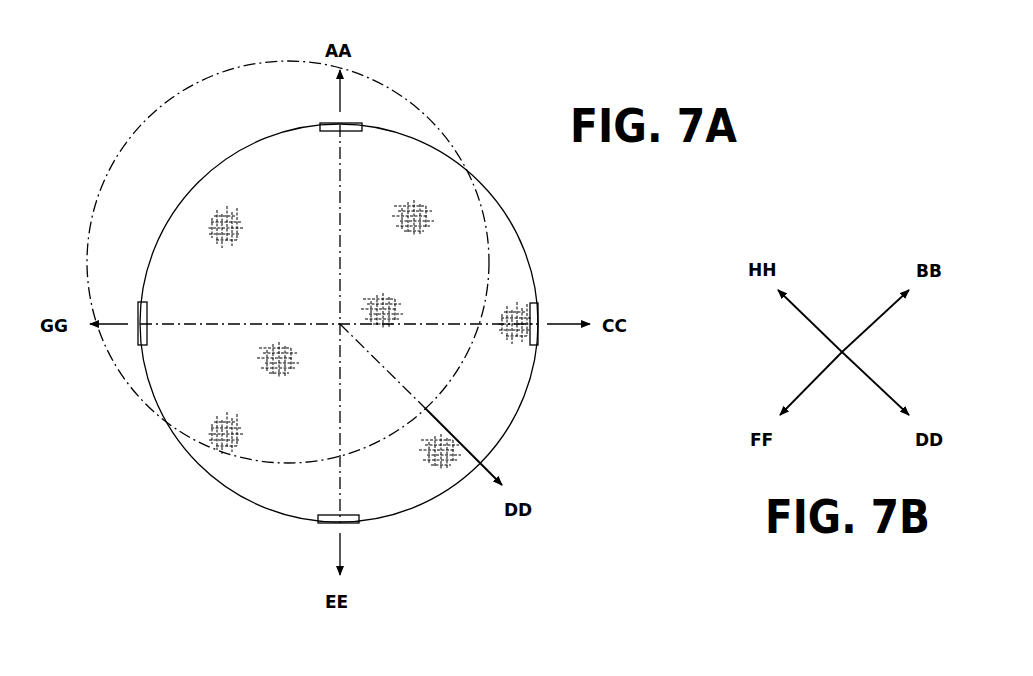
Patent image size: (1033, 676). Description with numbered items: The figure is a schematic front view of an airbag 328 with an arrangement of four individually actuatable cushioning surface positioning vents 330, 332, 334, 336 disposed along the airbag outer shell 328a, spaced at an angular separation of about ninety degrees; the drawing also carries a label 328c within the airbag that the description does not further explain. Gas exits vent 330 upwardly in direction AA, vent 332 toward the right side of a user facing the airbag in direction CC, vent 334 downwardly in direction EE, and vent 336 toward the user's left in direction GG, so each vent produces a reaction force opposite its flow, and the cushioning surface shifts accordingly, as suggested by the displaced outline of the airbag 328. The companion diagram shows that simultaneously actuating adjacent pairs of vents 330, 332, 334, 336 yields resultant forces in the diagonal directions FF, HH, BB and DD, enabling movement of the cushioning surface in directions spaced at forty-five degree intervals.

The airbag 328 is at (262, 172).
The airbag outer shell 328a is at (178, 92).
The marking features 328c is at (426, 271).
The cushioning surface positioning vent 330 is at (355, 123).
The cushioning surface positioning vent 332 is at (538, 310).
The cushioning surface positioning vent 334 is at (325, 525).
The cushioning surface positioning vent 336 is at (138, 315).